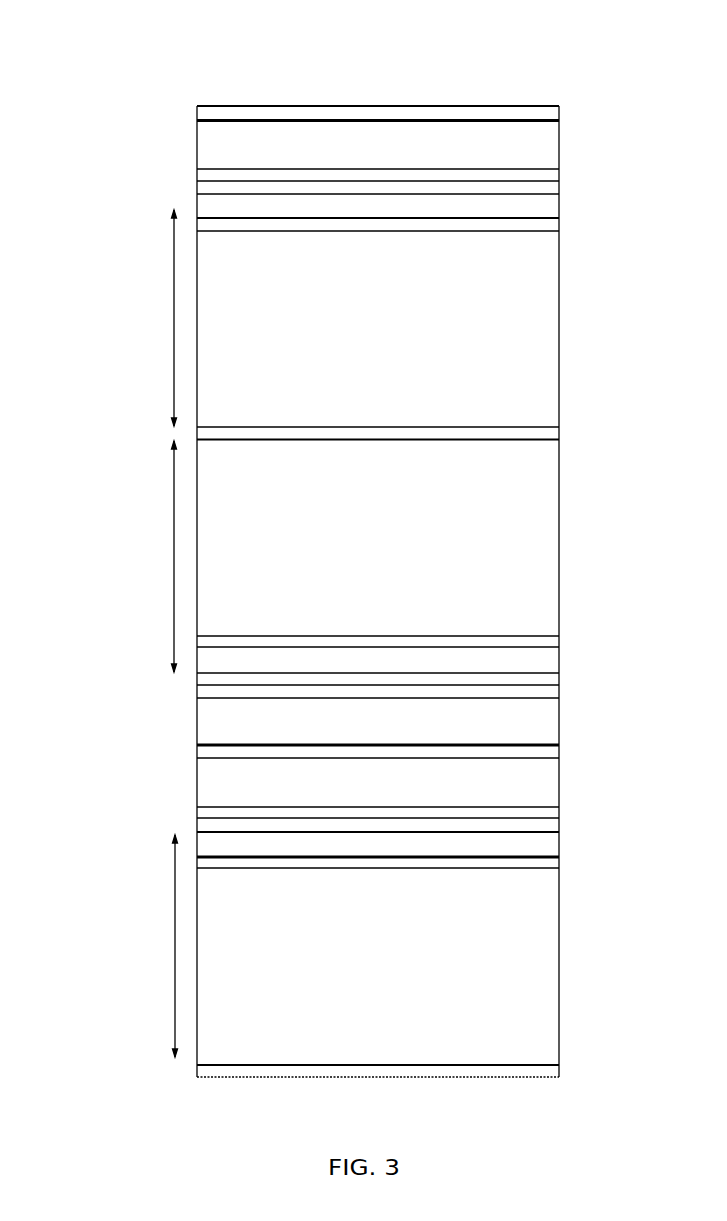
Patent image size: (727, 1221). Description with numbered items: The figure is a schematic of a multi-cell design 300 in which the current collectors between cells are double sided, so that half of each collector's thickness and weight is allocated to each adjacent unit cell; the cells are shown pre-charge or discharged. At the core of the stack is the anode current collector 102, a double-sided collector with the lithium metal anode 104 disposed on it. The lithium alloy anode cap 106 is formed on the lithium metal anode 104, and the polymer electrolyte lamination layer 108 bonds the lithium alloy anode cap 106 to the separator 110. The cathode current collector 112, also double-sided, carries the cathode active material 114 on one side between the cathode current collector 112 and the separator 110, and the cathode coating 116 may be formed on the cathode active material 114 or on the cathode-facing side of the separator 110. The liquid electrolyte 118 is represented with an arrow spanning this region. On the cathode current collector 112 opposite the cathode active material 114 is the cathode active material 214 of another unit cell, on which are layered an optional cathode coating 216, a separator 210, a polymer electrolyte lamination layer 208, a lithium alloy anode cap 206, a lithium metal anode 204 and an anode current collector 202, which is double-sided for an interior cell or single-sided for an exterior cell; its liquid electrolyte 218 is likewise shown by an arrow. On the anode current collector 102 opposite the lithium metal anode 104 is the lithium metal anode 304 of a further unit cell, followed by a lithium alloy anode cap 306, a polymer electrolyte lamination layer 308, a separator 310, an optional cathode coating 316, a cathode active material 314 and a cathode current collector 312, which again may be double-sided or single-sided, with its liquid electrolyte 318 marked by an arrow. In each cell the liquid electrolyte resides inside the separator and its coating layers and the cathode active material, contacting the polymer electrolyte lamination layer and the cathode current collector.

The multi-cell design 300 is at (102, 70).
The anode current collector 202 is at (536, 112).
The lithium metal anode 204 is at (527, 150).
The polymer electrolyte lamination layer 208 is at (533, 185).
The separator 210 is at (531, 210).
The cathode coating 216 is at (530, 227).
The cathode active material 214 is at (527, 346).
The cathode current collector 112 is at (527, 434).
The cathode active material 114 is at (527, 536).
The cathode coating 116 is at (532, 635).
The separator 110 is at (524, 665).
The polymer electrolyte lamination layer 108 is at (524, 690).
The lithium metal anode 104 is at (527, 727).
The anode current collector 102 is at (534, 752).
The lithium metal anode 304 is at (527, 794).
The polymer electrolyte lamination layer 308 is at (527, 822).
The separator 310 is at (530, 849).
The cathode coating 316 is at (542, 858).
The cathode active material 314 is at (522, 970).
The cathode current collector 312 is at (535, 1068).
The lithium alloy anode cap 206 is at (197, 170).
The liquid electrolyte 218 is at (174, 316).
The liquid electrolyte 118 is at (174, 502).
The lithium alloy anode cap 106 is at (197, 676).
The lithium alloy anode cap 306 is at (197, 810).
The liquid electrolyte 318 is at (172, 916).